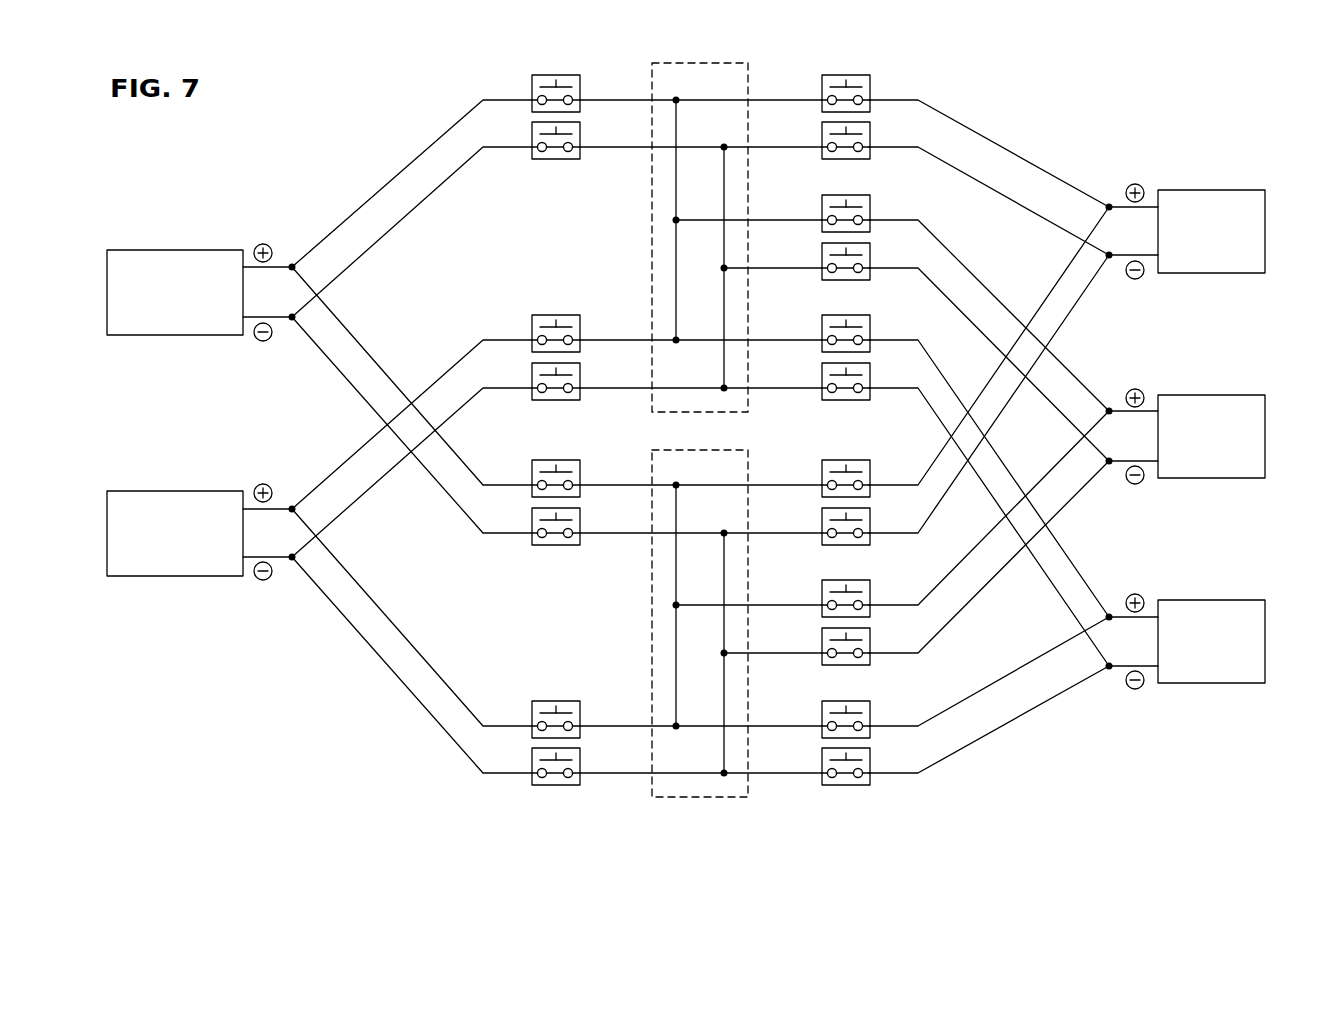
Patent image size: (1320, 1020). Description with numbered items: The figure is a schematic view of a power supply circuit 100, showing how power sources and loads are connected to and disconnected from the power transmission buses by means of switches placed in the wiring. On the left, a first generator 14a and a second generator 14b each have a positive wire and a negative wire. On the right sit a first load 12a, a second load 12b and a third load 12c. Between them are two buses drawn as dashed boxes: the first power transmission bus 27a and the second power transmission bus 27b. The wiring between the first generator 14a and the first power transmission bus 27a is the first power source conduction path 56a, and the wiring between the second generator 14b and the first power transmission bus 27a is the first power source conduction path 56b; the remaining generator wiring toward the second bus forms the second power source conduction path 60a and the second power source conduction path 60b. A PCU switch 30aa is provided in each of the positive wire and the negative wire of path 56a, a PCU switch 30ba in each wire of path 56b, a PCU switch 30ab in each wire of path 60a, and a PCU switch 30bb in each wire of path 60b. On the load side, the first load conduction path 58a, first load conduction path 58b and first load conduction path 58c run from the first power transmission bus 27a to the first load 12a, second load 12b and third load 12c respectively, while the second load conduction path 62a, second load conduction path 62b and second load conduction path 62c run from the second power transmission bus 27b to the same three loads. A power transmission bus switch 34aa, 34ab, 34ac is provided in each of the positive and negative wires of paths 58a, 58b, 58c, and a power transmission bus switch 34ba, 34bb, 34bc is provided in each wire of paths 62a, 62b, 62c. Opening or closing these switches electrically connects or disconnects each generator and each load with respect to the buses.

The power supply circuit 100 is at (324, 118).
The first generator 14a is at (165, 250).
The second generator 14b is at (170, 491).
The first load 12a is at (1211, 190).
The second load 12b is at (1211, 395).
The third load 12c is at (1211, 600).
The PCU switch 30aa is at (532, 142).
The PCU switch 30ab is at (532, 527).
The PCU switch 30ba is at (532, 382).
The PCU switch 30bb is at (532, 768).
The power transmission bus switch 34aa is at (870, 147).
The power transmission bus switch 34ab is at (870, 268).
The power transmission bus switch 34ac is at (870, 388).
The power transmission bus switch 34ba is at (870, 533).
The power transmission bus switch 34bb is at (870, 653).
The power transmission bus switch 34bc is at (870, 773).
The first power transmission bus 27a is at (652, 232).
The second power transmission bus 27b is at (652, 617).
The first power source conduction path 56a is at (612, 148).
The first power source conduction path 56b is at (612, 389).
The second power source conduction path 60a is at (612, 534).
The second power source conduction path 60b is at (598, 772).
The first load conduction path 58a is at (772, 147).
The first load conduction path 58b is at (772, 267).
The first load conduction path 58c is at (772, 387).
The second load conduction path 62a is at (772, 532).
The second load conduction path 62b is at (772, 652).
The second load conduction path 62c is at (772, 772).